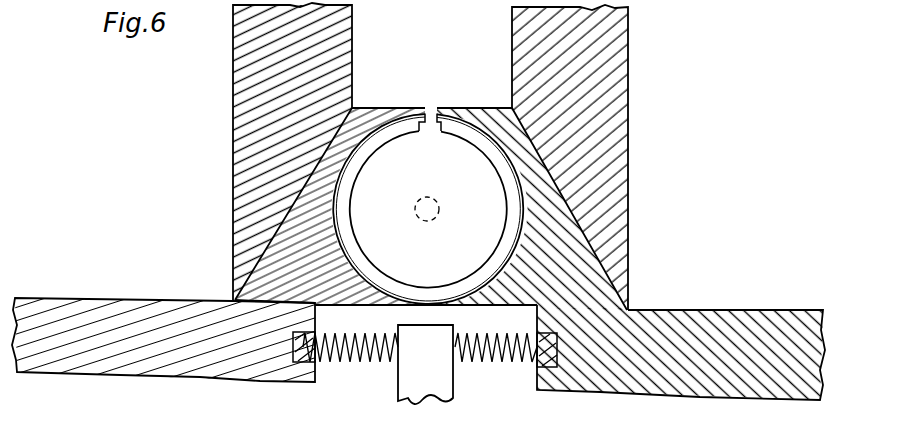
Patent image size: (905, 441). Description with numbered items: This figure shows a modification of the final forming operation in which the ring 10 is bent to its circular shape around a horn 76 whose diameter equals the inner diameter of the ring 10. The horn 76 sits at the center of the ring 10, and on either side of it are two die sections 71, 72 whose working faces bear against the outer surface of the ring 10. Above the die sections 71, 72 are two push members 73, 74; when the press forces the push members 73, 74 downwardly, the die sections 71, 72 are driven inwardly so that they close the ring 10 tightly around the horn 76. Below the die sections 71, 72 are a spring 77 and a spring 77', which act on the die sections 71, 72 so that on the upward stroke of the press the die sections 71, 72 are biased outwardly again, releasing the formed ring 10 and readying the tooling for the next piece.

The ring 10 is at (522, 196).
The die section 71 is at (288, 228).
The die section 72 is at (573, 262).
The push member 73 is at (233, 111).
The push member 74 is at (612, 132).
The horn 76 is at (438, 150).
The spring 77 is at (350, 372).
The spring 77' is at (496, 373).